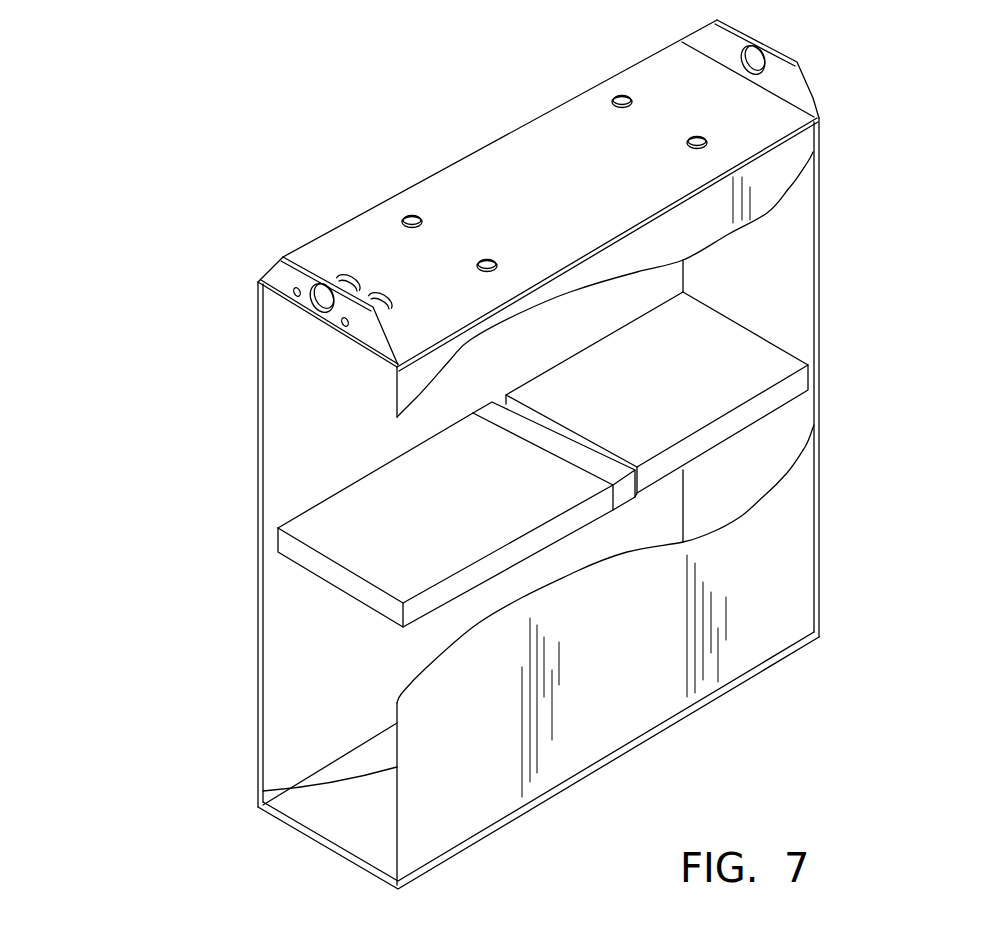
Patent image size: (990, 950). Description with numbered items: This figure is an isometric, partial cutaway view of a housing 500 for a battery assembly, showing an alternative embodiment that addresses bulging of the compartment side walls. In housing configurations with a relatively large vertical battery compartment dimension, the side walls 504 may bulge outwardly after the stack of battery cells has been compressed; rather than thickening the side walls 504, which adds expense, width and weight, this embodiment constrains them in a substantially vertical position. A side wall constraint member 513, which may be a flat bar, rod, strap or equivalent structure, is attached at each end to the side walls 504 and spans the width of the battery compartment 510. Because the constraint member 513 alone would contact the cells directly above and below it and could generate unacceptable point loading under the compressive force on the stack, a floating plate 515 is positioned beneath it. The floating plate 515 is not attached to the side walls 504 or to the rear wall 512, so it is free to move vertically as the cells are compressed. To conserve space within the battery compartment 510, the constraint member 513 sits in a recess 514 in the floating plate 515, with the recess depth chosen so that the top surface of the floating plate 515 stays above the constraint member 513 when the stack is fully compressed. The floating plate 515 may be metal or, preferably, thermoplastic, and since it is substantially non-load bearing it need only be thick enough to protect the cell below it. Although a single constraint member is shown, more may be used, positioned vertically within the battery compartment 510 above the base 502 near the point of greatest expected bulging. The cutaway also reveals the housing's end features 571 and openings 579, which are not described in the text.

The housing 500 is at (516, 73).
The base 502 is at (657, 731).
The side wall 504 is at (258, 350).
The battery compartment 510 is at (295, 469).
The rear wall 512 is at (820, 252).
The side wall constraint member 513 is at (497, 383).
The recess 514 is at (570, 442).
The floating plate 515 is at (767, 363).
The lid end flap 571 is at (283, 256).
The vent holes 579 is at (703, 137).